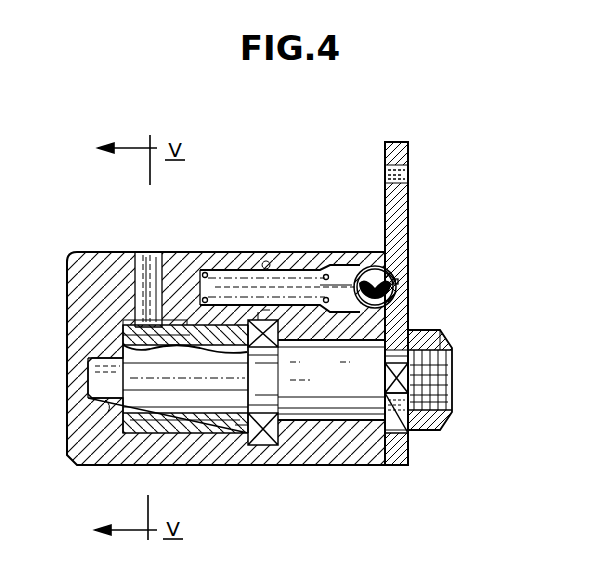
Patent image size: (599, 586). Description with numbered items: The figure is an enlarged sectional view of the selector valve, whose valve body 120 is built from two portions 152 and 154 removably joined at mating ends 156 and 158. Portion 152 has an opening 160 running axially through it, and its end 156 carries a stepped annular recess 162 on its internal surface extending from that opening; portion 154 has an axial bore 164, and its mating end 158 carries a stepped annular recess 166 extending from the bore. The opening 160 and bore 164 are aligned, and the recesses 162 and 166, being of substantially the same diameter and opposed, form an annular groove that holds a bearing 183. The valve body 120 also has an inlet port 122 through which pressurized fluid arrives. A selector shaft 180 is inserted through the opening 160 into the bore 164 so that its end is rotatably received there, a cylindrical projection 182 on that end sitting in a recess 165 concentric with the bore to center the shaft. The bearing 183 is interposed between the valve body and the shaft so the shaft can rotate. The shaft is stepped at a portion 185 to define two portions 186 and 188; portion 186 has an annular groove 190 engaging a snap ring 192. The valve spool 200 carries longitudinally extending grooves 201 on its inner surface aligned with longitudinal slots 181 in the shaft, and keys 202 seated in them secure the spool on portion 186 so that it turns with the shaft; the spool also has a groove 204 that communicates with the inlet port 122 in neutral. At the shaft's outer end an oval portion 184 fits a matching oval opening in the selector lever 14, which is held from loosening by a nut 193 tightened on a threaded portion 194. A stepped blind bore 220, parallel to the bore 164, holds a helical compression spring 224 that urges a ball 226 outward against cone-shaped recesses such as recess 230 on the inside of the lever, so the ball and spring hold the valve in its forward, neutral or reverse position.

The selector lever 14 is at (396, 190).
The valve body 120 is at (248, 190).
The inlet port 122 is at (140, 258).
The portion of the valve body 152 is at (308, 258).
The portion of the valve body 154 is at (92, 262).
The mating end 156 is at (268, 265).
The mating end 158 is at (254, 447).
The opening 160 is at (395, 330).
The stepped annular recess 162 is at (290, 445).
The bore 164 is at (178, 442).
The recess 165 is at (102, 400).
The stepped annular recess 166 is at (242, 432).
The selector shaft 180 is at (348, 420).
The longitudinal slots 181 is at (185, 385).
The cylindrical projection 182 is at (102, 384).
The bearing 183 is at (266, 320).
The oval portion 184 is at (398, 434).
The stepped portion 185 is at (284, 384).
The portion of the selector shaft 186 is at (410, 332).
The portion of the selector shaft 188 is at (125, 440).
The annular groove 190 is at (266, 447).
The snap ring 192 is at (260, 320).
The nut 193 is at (444, 331).
The threaded portion 194 is at (440, 395).
The valve spool 200 is at (147, 322).
The longitudinally extending grooves 201 is at (158, 330).
The keys 202 is at (140, 350).
The groove 204 is at (133, 324).
The stepped blind bore 220 is at (387, 268).
The helical compression spring 224 is at (334, 282).
The ball 226 is at (389, 285).
The cone-shaped recess 230 is at (399, 283).